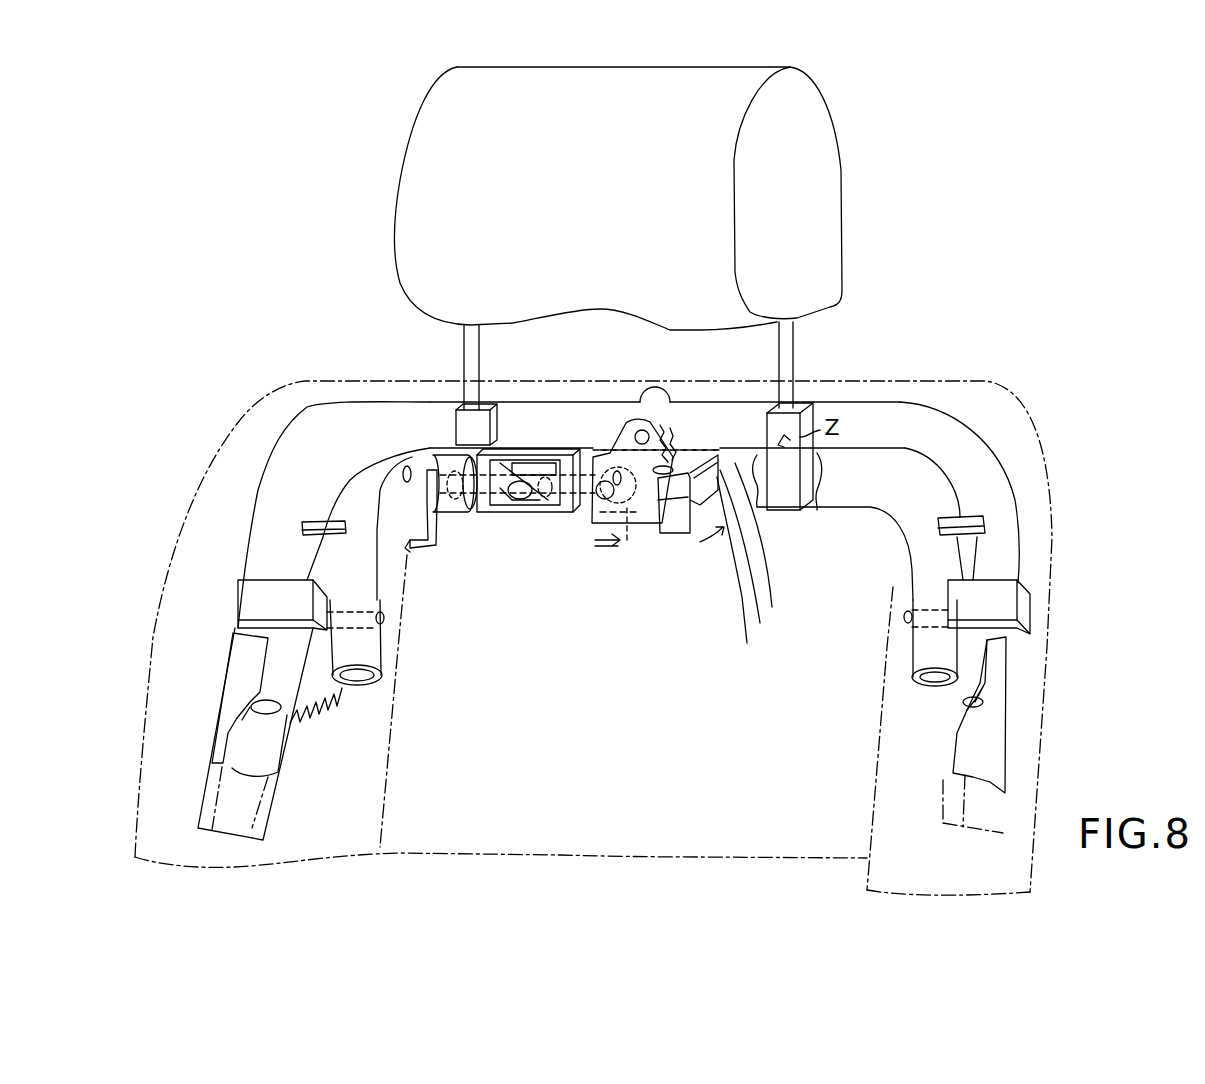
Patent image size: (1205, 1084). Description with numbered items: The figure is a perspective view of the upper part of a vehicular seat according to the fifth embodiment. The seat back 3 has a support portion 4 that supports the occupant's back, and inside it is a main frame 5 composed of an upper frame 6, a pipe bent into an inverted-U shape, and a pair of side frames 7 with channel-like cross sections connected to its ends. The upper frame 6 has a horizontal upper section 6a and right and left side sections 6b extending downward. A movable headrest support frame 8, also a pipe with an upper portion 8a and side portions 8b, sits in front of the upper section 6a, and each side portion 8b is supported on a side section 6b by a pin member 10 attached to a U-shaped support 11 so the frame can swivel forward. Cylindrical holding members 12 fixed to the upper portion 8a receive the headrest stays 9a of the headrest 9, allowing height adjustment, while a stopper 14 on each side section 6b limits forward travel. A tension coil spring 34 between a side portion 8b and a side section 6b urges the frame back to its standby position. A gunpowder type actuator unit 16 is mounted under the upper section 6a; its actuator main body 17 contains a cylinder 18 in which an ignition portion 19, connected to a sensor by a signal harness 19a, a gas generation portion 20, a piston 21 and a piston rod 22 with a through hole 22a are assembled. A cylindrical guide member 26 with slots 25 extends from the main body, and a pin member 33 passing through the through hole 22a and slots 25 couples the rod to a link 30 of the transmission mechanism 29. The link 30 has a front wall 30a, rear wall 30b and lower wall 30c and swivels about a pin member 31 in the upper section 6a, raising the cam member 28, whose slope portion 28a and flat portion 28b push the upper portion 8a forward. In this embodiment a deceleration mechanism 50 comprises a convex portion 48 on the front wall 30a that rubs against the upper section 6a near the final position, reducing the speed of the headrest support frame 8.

The seat back 3 is at (1033, 757).
The support portion 4 is at (640, 850).
The main frame 5 is at (1140, 445).
The upper frame 6 is at (667, 621).
The upper section 6a is at (930, 428).
The side section 6b is at (1020, 550).
The side frame 7 is at (1010, 672).
The headrest support frame 8 is at (645, 526).
The upper portion 8a is at (826, 510).
The side portion 8b is at (859, 535).
The headrest 9 is at (828, 203).
The headrest stay 9a is at (465, 358).
The pin member 10 is at (386, 620).
The U-shaped support 11 is at (245, 603).
The holding member 12 is at (497, 410).
The stopper 14 is at (300, 526).
The actuator unit 16 is at (617, 504).
The actuator main body 17 is at (523, 455).
The cylinder 18 is at (550, 463).
The ignition portion 19 is at (450, 463).
The signal harness 19a is at (425, 550).
The gas generation portion 20 is at (468, 513).
The piston 21 is at (512, 505).
The piston rod 22 is at (545, 505).
The through hole 22a is at (618, 550).
The slot 25 is at (658, 518).
The guide member 26 is at (587, 505).
The cam member 28 is at (669, 584).
The slope portion 28a is at (672, 495).
The flat portion 28b is at (675, 520).
The transmission mechanism 29 is at (659, 395).
The link 30 is at (774, 570).
The front wall 30a is at (745, 574).
The rear wall 30b is at (774, 543).
The lower wall 30c is at (757, 558).
The pin member 31 is at (640, 430).
The pin member 33 is at (602, 482).
The tension coil spring 34 is at (315, 723).
The convex portion 48 is at (672, 450).
The deceleration mechanism 50 is at (716, 430).